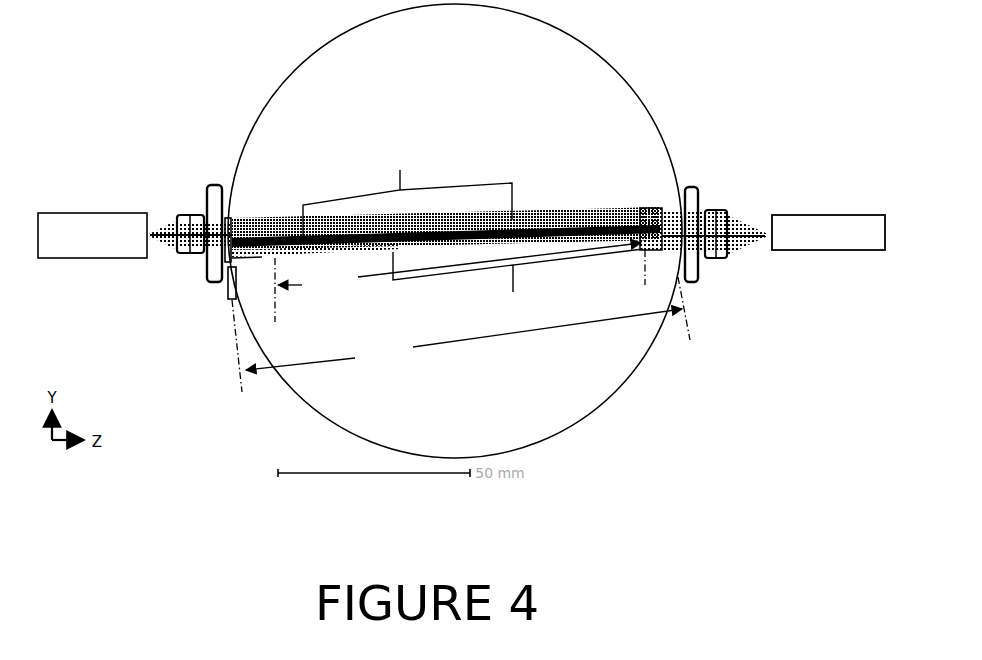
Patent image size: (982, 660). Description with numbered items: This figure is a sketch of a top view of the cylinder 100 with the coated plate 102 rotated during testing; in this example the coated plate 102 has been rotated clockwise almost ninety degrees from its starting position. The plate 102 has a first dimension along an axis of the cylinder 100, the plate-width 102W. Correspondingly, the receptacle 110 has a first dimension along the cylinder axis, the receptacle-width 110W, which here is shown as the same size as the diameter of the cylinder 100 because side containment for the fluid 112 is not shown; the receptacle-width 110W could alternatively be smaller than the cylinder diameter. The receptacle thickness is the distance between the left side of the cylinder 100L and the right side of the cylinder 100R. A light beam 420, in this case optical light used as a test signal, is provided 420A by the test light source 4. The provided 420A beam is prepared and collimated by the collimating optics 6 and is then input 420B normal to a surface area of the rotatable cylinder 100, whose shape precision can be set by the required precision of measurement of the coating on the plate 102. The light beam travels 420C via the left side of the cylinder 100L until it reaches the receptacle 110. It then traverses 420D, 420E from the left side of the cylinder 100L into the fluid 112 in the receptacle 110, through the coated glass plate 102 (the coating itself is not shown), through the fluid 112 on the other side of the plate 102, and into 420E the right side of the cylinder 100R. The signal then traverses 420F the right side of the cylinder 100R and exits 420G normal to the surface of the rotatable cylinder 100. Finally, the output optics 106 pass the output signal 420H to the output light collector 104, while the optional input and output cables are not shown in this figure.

The test light source 4 is at (92, 235).
The collimating optics 6 is at (193, 178).
The cylinder 100 is at (438, 231).
The left side of the cylinder 100L is at (455, 117).
The right side of the cylinder 100R is at (455, 344).
The coated plate 102 is at (583, 213).
The plate-width 102W is at (460, 282).
The output light collector 104 is at (828, 232).
The output optics 106 is at (727, 150).
The receptacle 110 is at (223, 268).
The receptacle-width 110W is at (461, 334).
The fluid 112 is at (258, 257).
The light beam 420 is at (438, 216).
The provided light beam 420A is at (173, 226).
The input light beam 420B is at (227, 222).
The light beam traveling through left side 420C is at (272, 223).
The light beam traversing receptacle 420D is at (407, 192).
The light beam entering right side 420E is at (518, 281).
The light beam traversing right side 420F is at (657, 218).
The exiting light beam 420G is at (682, 206).
The output signal 420H is at (737, 220).